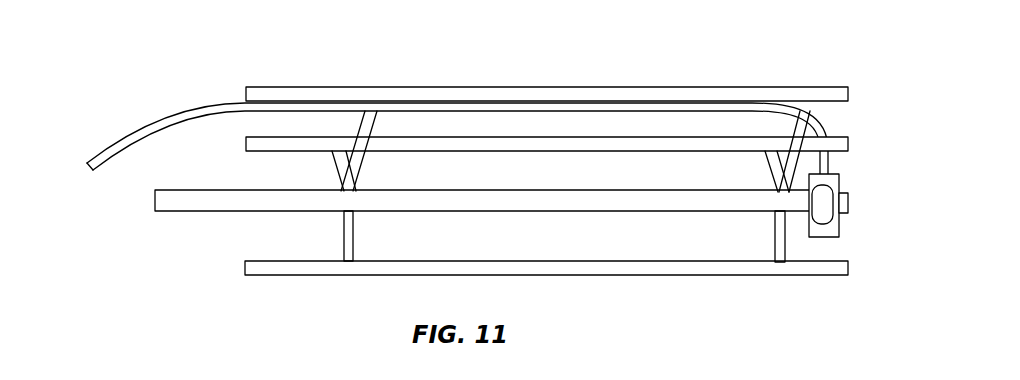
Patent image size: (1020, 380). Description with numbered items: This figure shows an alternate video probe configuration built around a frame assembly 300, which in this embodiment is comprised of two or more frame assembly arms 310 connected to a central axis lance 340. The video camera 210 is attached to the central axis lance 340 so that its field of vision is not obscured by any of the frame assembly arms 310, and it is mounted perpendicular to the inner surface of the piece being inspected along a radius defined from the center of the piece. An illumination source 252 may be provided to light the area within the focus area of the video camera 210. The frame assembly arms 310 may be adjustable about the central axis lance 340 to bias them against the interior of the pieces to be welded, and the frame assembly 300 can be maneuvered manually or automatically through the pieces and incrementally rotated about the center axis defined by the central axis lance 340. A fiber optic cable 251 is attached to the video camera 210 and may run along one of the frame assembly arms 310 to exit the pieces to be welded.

The frame assembly 300 is at (448, 83).
The frame assembly arms 310 is at (580, 176).
The central axis lance 340 is at (482, 221).
The fiber optic cable 251 is at (451, 122).
The video camera 210 is at (863, 199).
The illumination source 252 is at (864, 215).